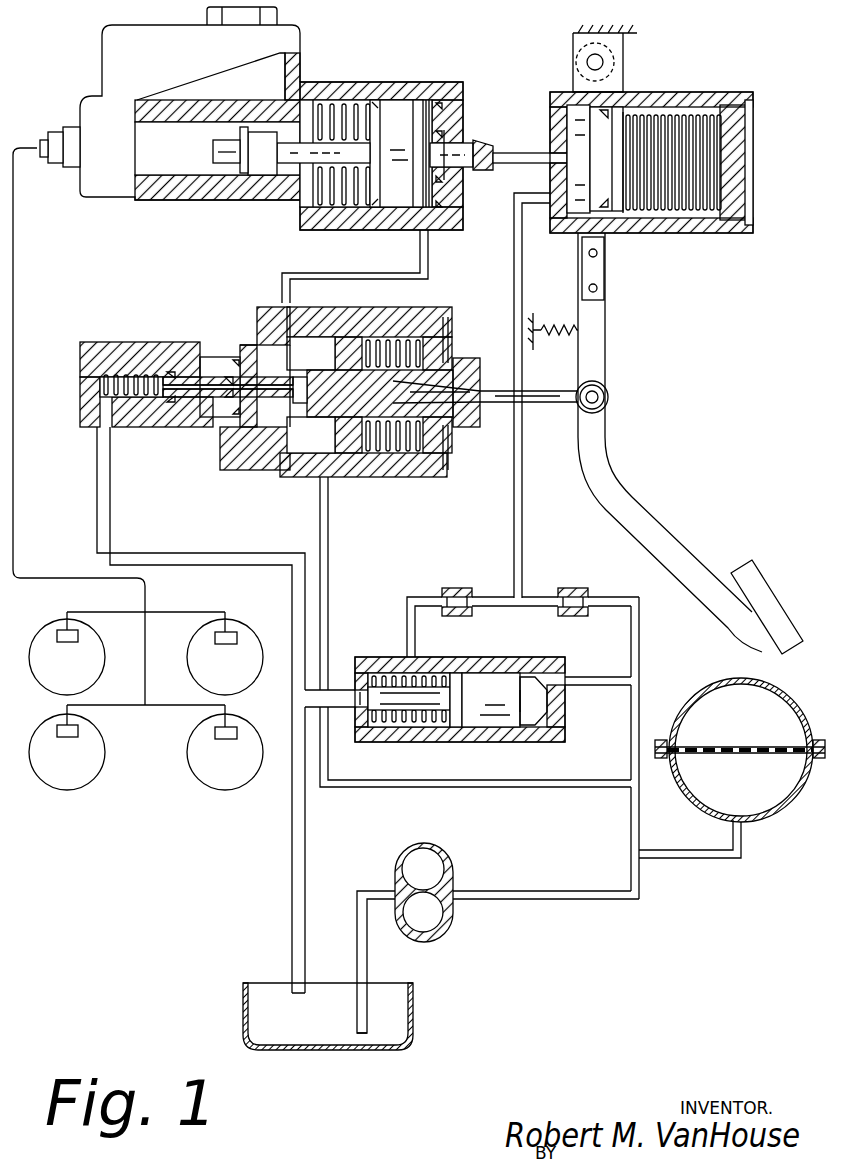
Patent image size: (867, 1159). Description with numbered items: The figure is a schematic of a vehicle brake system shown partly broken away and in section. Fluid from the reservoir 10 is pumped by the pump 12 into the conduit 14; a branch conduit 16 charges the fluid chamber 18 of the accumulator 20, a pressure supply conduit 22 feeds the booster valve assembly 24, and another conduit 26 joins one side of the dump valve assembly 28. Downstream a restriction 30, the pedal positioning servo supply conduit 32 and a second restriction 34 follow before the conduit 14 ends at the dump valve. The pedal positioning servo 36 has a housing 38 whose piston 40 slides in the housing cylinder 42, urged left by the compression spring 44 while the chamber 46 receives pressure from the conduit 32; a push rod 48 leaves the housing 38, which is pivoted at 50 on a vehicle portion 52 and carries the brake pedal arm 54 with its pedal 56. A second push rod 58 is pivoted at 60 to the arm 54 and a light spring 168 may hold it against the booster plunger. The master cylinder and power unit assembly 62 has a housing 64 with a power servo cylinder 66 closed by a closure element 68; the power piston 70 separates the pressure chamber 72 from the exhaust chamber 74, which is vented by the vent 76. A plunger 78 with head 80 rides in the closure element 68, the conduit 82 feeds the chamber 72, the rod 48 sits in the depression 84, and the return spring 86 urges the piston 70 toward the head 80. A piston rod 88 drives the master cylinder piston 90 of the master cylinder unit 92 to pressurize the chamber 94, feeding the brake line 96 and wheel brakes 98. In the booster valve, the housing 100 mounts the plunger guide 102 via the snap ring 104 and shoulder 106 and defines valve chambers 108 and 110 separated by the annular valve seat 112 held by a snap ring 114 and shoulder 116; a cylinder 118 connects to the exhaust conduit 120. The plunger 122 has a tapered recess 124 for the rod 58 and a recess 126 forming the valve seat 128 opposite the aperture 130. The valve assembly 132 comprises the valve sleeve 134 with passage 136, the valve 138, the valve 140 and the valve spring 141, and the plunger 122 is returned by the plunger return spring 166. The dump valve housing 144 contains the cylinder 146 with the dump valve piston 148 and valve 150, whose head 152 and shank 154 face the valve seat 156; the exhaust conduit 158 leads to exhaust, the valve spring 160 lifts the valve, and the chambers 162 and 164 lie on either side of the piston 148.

The fluid reservoir 10 is at (413, 1005).
The pump 12 is at (450, 915).
The conduit 14 is at (415, 585).
The branch conduit 16 is at (708, 852).
The fluid chamber 18 is at (740, 731).
The accumulator 20 is at (757, 681).
The pressure supply conduit 22 is at (541, 787).
The booster valve assembly 24 is at (273, 393).
The conduit 26 is at (605, 677).
The dump valve assembly 28 is at (600, 774).
The restriction 30 is at (572, 588).
The pedal positioning servo supply conduit 32 is at (523, 512).
The second restriction 34 is at (456, 588).
The pedal positioning servo 36 is at (636, 157).
The housing 38 is at (688, 192).
The piston 40 is at (575, 125).
The housing cylinder 42 is at (665, 215).
The compression spring 44 is at (700, 115).
The chamber 46 is at (582, 132).
The push rod 48 is at (508, 152).
The pivot 50 is at (587, 61).
The portion of the vehicle 52 is at (580, 26).
The brake pedal arm 54 is at (694, 443).
The pedal 56 is at (783, 572).
The second push rod 58 is at (555, 403).
The pivot 60 is at (600, 400).
The master cylinder and power unit assembly 62 is at (302, 133).
The housing 64 is at (350, 85).
The power servo cylinder 66 is at (325, 100).
The closure element 68 is at (450, 115).
The power piston 70 is at (405, 108).
The pressure chamber 72 is at (445, 190).
The exhaust chamber 74 is at (355, 200).
The vent 76 is at (315, 200).
The plunger 78 is at (470, 150).
The head 80 is at (432, 140).
The conduit 82 is at (283, 262).
The depression 84 is at (487, 172).
The power piston return spring 86 is at (390, 105).
The piston rod 88 is at (290, 140).
The master cylinder piston 90 is at (262, 160).
The master cylinder unit 92 is at (95, 105).
The master cylinder pressure chamber 94 is at (168, 165).
The brake line 96 is at (14, 228).
The wheel brakes 98 is at (78, 636).
The housing 100 is at (365, 322).
The plunger guide 102 is at (408, 330).
The snap ring 104 is at (452, 330).
The shoulder 106 is at (345, 460).
The valve chamber 108 is at (215, 360).
The valve chamber 110 is at (275, 318).
The annular valve seat 112 is at (275, 300).
The snap ring 114 is at (270, 470).
The shoulder 116 is at (255, 465).
The cylinder 118 is at (132, 345).
The exhaust conduit 120 is at (98, 443).
The plunger 122 is at (465, 428).
The tapered recess 124 is at (470, 398).
The recess 126 is at (300, 380).
The annular valve seat 128 is at (292, 340).
The aperture 130 is at (240, 355).
The valve assembly 132 is at (180, 400).
The valve sleeve 134 is at (165, 392).
The passage 136 is at (180, 375).
The valve 138 is at (215, 420).
The valve 140 is at (335, 418).
The valve spring 141 is at (100, 383).
The housing 144 is at (562, 710).
The cylinder 146 is at (530, 728).
The dump valve piston 148 is at (497, 680).
The valve 150 is at (477, 685).
The head 152 is at (456, 675).
The shank 154 is at (410, 710).
The valve seat 156 is at (358, 690).
The exhaust conduit 158 is at (303, 700).
The valve spring 160 is at (380, 725).
The chamber 162 is at (415, 675).
The chamber 164 is at (541, 678).
The plunger return spring 166 is at (388, 448).
The light spring 168 is at (556, 328).